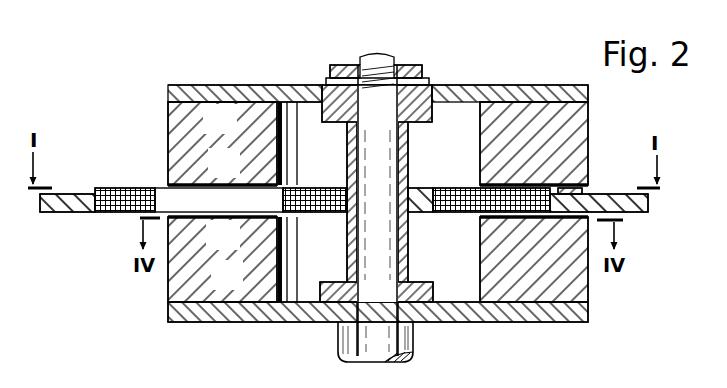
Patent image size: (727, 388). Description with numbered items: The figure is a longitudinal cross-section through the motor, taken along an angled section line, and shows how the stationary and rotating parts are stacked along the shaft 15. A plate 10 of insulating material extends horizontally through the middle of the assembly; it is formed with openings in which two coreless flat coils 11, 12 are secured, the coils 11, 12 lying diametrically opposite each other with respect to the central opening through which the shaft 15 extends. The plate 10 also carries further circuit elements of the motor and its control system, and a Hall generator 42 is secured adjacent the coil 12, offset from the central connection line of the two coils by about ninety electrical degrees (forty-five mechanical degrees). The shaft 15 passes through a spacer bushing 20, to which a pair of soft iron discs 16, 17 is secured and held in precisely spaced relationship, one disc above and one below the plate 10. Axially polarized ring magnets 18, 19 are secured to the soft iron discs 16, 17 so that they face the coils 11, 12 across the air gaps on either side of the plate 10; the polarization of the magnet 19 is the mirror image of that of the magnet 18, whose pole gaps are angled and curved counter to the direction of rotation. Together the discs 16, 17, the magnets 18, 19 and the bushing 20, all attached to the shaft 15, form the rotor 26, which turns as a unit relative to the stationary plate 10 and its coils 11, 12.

The plate 10 is at (80, 213).
The coreless flat coil 11 is at (120, 189).
The coreless flat coil 12 is at (473, 199).
The shaft 15 is at (375, 224).
The soft iron disc 16 is at (226, 312).
The soft iron disc 17 is at (250, 93).
The ring magnet 18 is at (178, 284).
The ring magnet 19 is at (183, 146).
The spacer bushing 20 is at (410, 242).
The rotor 26 is at (452, 67).
The Hall generator 42 is at (571, 184).